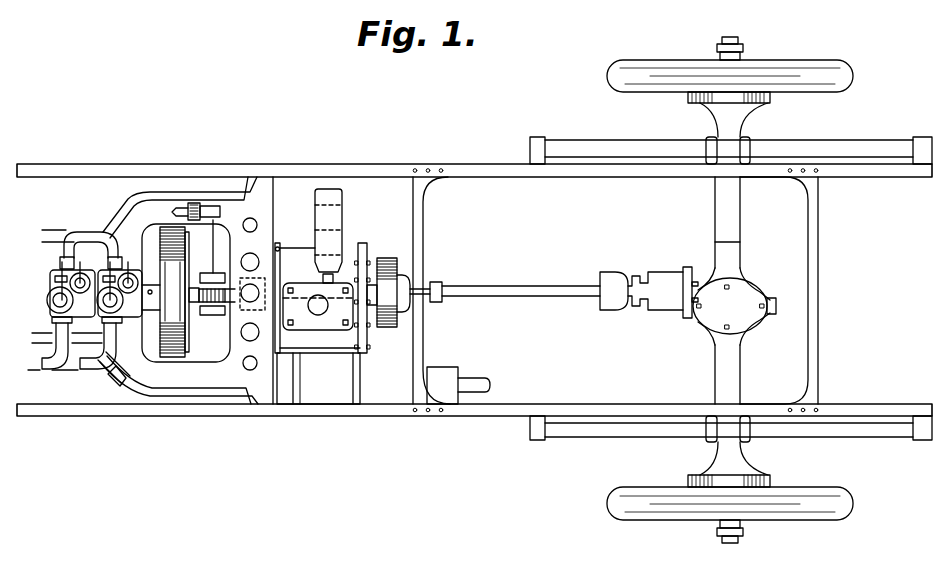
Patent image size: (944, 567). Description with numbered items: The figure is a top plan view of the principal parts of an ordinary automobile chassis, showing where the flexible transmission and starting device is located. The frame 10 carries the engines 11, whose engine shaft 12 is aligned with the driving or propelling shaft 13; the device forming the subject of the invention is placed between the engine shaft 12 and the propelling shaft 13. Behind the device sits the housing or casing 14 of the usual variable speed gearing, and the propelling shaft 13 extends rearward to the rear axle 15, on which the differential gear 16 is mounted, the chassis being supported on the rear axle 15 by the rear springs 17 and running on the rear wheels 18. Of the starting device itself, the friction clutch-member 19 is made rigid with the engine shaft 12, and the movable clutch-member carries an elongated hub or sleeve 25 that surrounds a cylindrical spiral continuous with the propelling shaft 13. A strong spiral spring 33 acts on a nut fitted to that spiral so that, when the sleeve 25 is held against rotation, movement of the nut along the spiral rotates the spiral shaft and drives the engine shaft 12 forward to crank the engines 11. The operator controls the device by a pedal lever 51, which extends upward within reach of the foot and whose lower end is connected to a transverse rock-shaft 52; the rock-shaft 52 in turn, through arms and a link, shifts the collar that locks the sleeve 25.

The frame 10 is at (367, 166).
The engines 11 is at (88, 262).
The engine shaft 12 is at (155, 298).
The driving or propelling shaft 13 is at (302, 302).
The housing or casing of the variable speed gearing 14 is at (337, 330).
The rear axle 15 is at (725, 205).
The differential gear 16 is at (743, 298).
The rear springs 17 is at (645, 146).
The rear wheels 18 is at (810, 88).
The friction clutch member 19 is at (158, 248).
The elongated hub or sleeve 25 is at (197, 287).
The spiral spring 33 is at (213, 288).
The pedal lever 51 is at (207, 204).
The transverse rock-shaft 52 is at (215, 236).